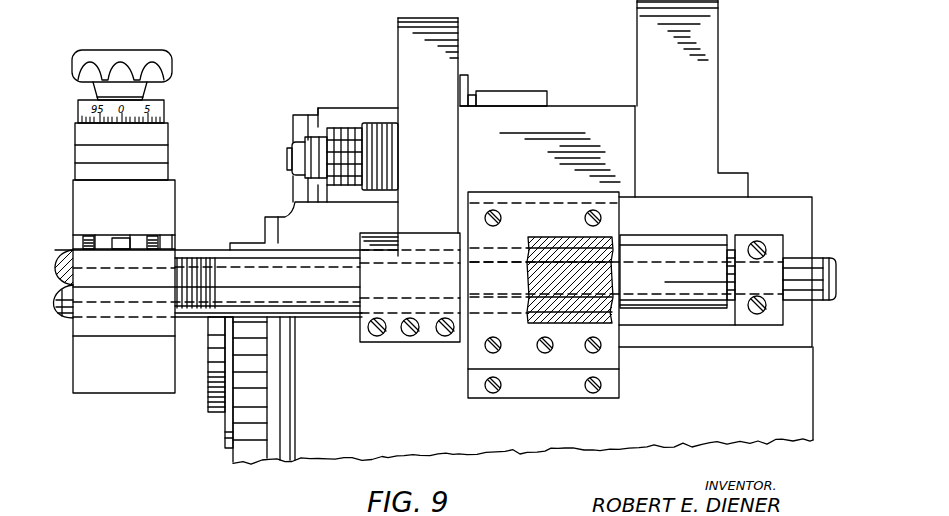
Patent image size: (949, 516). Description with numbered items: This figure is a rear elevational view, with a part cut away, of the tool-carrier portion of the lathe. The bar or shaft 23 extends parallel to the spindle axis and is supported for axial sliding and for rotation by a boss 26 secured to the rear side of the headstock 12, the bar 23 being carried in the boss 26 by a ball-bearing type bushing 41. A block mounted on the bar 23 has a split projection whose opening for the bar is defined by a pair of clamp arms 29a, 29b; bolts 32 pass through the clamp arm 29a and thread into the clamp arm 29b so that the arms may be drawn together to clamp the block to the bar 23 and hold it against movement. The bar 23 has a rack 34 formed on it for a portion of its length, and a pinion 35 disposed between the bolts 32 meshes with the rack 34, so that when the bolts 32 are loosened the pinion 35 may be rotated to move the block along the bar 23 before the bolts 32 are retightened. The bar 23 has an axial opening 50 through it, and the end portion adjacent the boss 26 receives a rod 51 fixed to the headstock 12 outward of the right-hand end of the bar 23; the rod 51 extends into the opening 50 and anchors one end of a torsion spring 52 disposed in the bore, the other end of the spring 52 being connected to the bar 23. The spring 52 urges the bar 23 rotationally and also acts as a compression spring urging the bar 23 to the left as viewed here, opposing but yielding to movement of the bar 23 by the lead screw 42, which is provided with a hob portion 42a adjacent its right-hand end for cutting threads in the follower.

The headstock 12 is at (523, 405).
The bar or shaft 23 is at (316, 318).
The boss 26 is at (612, 357).
The clamp arm 29a is at (180, 250).
The clamp arm 29b is at (168, 337).
The bolts 32 is at (100, 214).
The rack 34 is at (216, 286).
The pinion 35 is at (121, 238).
The ball-bearing type bushing 41 is at (608, 240).
The lead screw 42 is at (380, 86).
The hob portion 42a is at (333, 126).
The axial opening 50 is at (395, 265).
The rod 51 is at (800, 265).
The torsion spring 52 is at (609, 290).